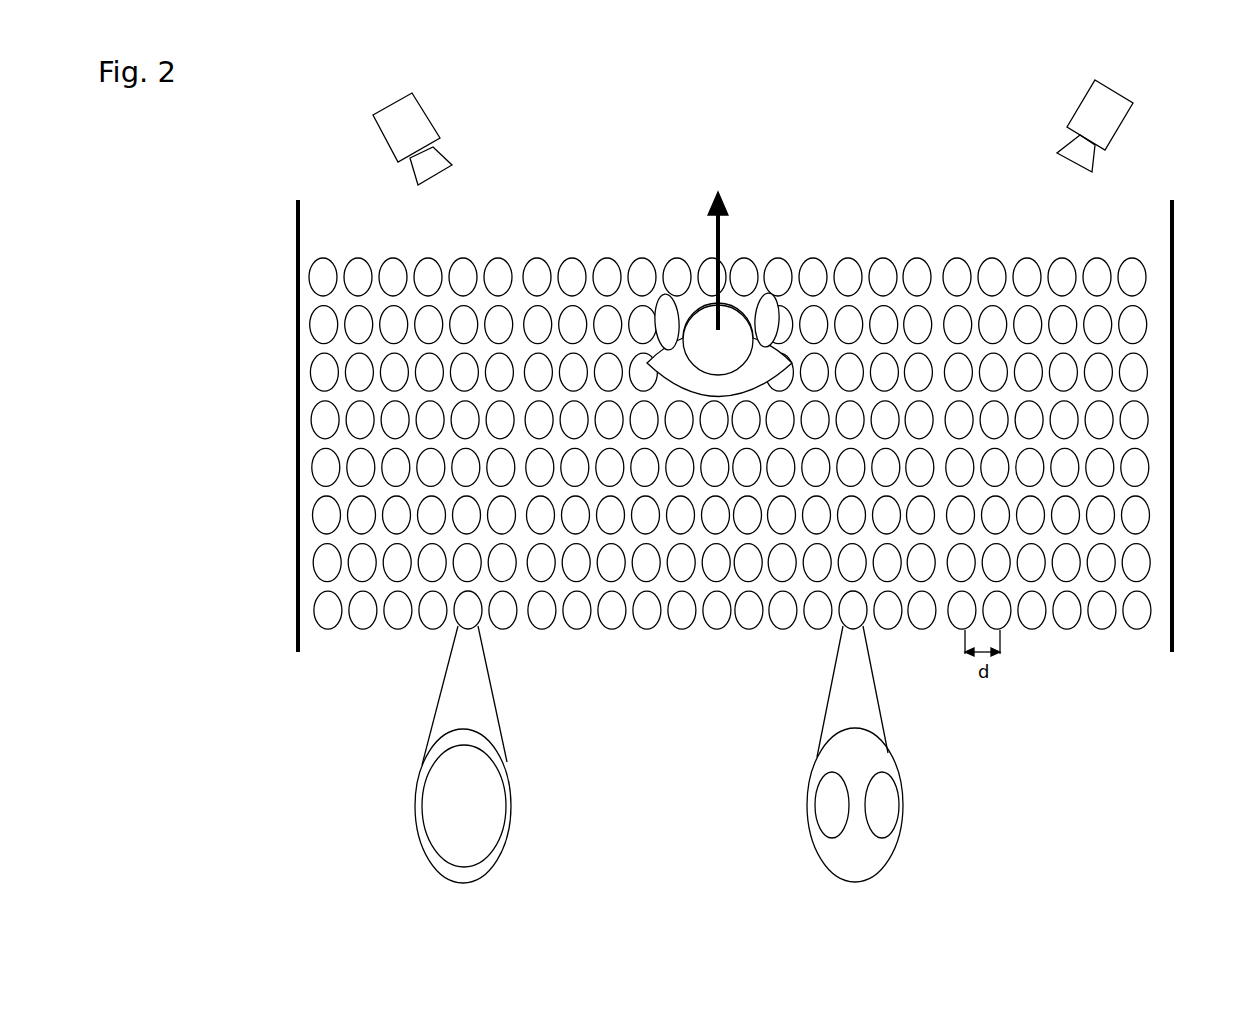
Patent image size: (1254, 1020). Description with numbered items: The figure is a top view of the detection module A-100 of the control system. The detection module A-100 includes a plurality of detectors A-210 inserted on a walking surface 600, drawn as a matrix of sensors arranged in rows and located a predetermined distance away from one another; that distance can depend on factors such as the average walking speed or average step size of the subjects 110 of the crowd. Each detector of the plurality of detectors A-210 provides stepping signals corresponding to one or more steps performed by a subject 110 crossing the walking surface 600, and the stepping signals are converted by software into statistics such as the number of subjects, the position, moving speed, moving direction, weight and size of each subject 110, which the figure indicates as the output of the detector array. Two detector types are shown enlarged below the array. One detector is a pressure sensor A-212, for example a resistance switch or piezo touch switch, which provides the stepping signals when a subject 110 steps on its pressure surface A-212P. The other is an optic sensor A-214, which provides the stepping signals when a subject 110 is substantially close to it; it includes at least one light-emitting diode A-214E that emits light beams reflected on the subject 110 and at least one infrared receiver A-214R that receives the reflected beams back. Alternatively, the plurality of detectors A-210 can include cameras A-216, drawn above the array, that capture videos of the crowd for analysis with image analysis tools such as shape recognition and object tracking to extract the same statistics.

The detection module A-100 is at (258, 183).
The walking surface 600 is at (703, 665).
The subject 110 is at (782, 368).
The plurality of detectors A-210 is at (988, 188).
The camera A-216 is at (418, 113).
The pressure sensor A-212 is at (453, 617).
The pressure surface A-212P is at (442, 752).
The optic sensor A-214 is at (837, 617).
The infrared receiver A-214R is at (815, 780).
The light-emitting diode A-214E is at (890, 855).